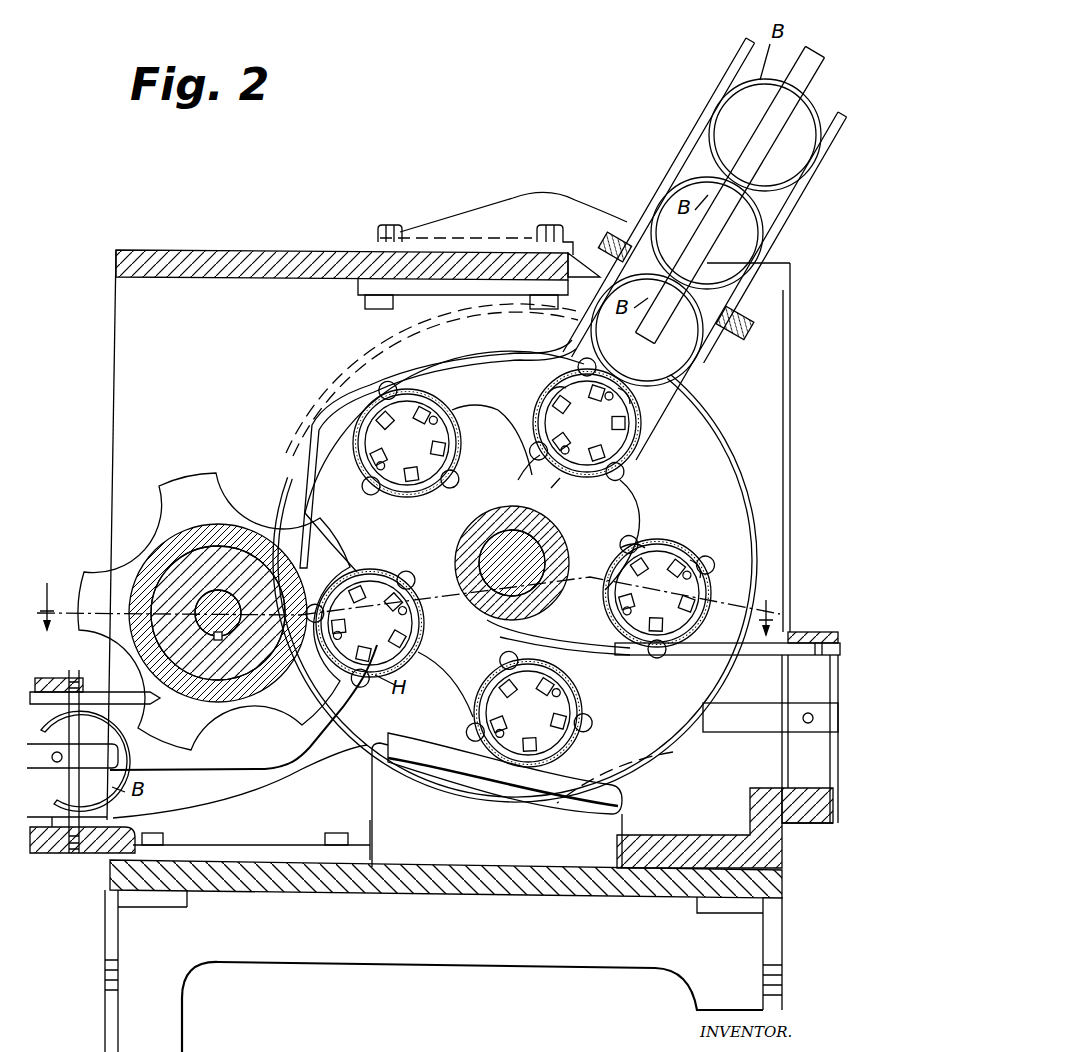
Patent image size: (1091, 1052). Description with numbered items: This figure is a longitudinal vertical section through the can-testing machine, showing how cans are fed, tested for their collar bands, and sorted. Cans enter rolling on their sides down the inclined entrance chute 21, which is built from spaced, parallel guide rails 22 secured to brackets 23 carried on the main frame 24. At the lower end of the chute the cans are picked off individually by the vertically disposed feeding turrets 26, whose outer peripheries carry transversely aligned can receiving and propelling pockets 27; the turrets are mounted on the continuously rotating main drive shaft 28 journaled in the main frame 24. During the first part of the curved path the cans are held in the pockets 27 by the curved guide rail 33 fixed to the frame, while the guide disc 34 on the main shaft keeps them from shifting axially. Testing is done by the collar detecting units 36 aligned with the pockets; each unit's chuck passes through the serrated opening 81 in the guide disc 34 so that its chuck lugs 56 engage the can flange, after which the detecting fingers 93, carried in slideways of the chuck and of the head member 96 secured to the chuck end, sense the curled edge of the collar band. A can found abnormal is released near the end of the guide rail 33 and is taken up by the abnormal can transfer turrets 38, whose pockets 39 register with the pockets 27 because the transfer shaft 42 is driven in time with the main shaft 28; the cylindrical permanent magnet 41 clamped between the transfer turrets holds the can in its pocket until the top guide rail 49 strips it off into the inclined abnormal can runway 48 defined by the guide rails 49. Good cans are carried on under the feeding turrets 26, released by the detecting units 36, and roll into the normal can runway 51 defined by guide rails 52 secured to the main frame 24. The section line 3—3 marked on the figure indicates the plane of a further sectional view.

The section line 3- 3 is at (410, 595).
The entrance chute 21 is at (697, 135).
The guide rails 22 is at (700, 146).
The brackets 23 is at (508, 210).
The main frame 24 is at (245, 255).
The feeding turrets 26 is at (620, 500).
The can receiving and propelling pockets 27 is at (500, 668).
The main drive shaft 28 is at (505, 540).
The curved guide rail 33 is at (520, 356).
The guide disc 34 is at (693, 397).
The collar detecting units 36 is at (440, 405).
The abnormal can transfer turrets 38 is at (190, 486).
The pockets 39 is at (160, 528).
The cylindrical permanent magnet 41 is at (232, 530).
The transfer shaft 42 is at (205, 605).
The abnormal can runway 48 is at (185, 797).
The guide rails 49 is at (130, 690).
The normal can runway 51 is at (570, 795).
The guide rails 52 is at (740, 660).
The chuck lugs 56 is at (556, 390).
The serrated opening 81 is at (572, 347).
The detecting fingers 93 is at (606, 438).
The head member 96 is at (575, 470).